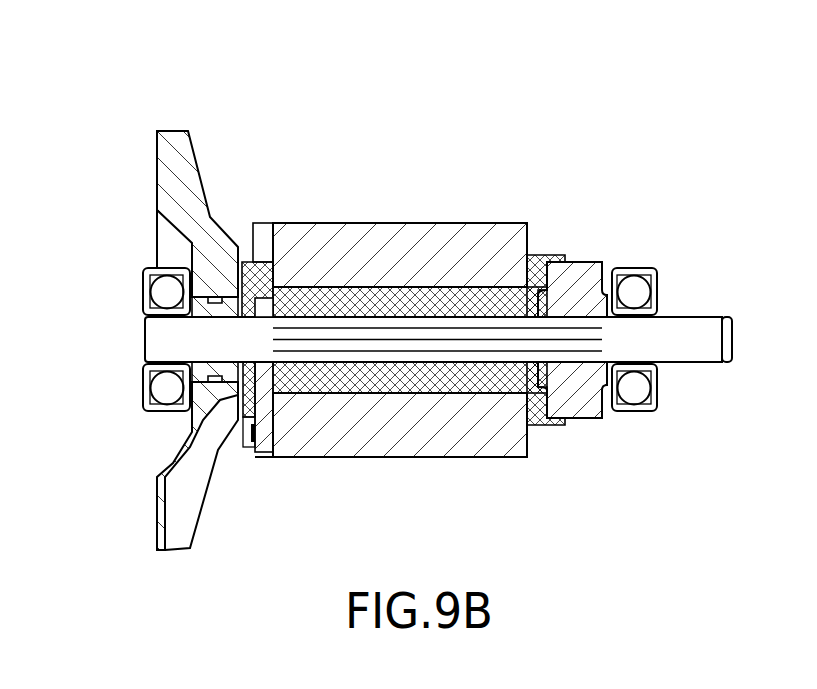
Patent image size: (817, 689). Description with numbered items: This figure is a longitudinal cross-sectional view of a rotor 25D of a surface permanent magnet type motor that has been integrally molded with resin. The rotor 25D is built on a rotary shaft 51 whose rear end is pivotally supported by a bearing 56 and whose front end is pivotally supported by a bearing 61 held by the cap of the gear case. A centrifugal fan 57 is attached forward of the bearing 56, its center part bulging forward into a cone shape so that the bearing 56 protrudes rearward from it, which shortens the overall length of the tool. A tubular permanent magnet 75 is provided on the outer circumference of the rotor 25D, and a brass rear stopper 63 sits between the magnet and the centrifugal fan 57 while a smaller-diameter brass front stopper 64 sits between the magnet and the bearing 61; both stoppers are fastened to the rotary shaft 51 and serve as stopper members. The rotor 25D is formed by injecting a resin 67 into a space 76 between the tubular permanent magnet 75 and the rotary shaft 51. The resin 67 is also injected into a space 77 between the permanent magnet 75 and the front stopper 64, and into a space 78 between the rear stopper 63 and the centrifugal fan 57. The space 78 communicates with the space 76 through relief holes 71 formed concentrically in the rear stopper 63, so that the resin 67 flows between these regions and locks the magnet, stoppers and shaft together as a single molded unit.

The rotor 25D is at (470, 172).
The rotary shaft 51 is at (707, 342).
The bearing 56 is at (167, 293).
The centrifugal fan 57 is at (177, 142).
The bearing 61 is at (634, 292).
The rear stopper 63 is at (263, 245).
The front stopper 64 is at (585, 278).
The resin 67 is at (418, 308).
The relief holes 71 is at (258, 262).
The tubular permanent magnet 75 is at (352, 240).
The space 76 is at (420, 398).
The space 77 is at (538, 430).
The space 78 is at (250, 422).